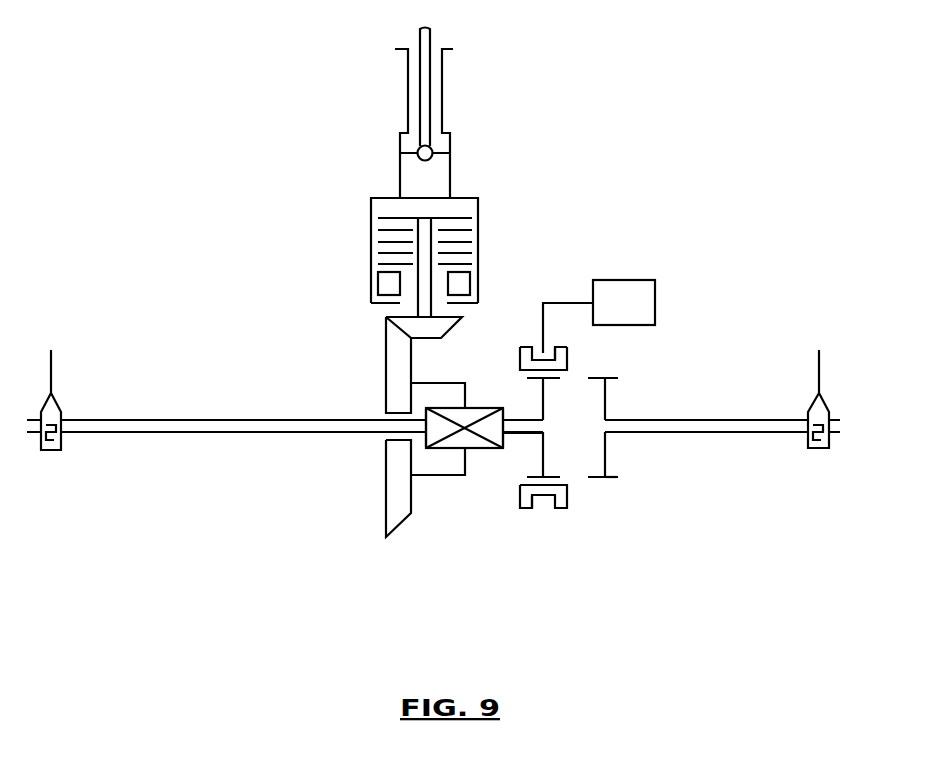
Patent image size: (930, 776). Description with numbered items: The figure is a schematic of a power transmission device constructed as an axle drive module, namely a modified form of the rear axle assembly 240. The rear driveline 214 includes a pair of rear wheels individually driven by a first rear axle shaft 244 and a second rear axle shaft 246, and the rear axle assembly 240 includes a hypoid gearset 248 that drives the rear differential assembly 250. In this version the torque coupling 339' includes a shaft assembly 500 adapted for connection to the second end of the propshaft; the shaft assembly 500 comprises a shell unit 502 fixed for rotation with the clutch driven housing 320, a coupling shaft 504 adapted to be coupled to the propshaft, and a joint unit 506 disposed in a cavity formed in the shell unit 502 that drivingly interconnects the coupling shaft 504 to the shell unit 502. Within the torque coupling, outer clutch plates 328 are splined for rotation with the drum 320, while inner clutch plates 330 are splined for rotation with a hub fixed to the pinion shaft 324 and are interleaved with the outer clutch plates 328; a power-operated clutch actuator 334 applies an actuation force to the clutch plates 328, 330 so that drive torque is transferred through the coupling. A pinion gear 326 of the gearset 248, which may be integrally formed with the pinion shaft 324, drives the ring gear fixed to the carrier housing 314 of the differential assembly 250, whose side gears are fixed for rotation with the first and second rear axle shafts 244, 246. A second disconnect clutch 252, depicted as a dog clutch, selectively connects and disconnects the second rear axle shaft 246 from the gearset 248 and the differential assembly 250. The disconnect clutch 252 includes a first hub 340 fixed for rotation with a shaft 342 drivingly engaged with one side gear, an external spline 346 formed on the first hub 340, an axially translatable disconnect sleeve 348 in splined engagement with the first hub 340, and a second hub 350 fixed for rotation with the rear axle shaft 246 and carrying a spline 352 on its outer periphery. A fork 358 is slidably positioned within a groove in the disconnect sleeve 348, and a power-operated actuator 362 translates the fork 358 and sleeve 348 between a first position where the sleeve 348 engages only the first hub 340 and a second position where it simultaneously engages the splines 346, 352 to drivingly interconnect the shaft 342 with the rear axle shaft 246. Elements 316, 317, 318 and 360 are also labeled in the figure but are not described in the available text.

The rear axle assembly 240 is at (212, 182).
The first rear axle shaft 244 is at (135, 420).
The second rear axle shaft 246 is at (777, 420).
The second hypoid gearset 248 is at (355, 385).
The rear differential assembly 250 is at (493, 402).
The second disconnect clutch 252 is at (585, 513).
The rear driveline 214 is at (585, 242).
The carrier housing 314 is at (415, 380).
The shaft 316 is at (440, 428).
The clutch 317 is at (493, 428).
The gear face 318 is at (473, 412).
The drum 320 is at (371, 202).
The pinion shaft 324 is at (425, 237).
The pinion gear 326 is at (412, 315).
The outer clutch plates 328 is at (453, 232).
The inner clutch plates 330 is at (398, 257).
The power-operated clutch actuator 334 is at (470, 285).
The torque coupling 339' is at (436, 235).
The first hub 340 is at (543, 467).
The shaft 342 is at (520, 432).
The external spline 346 is at (549, 492).
The disconnect sleeve 348 is at (560, 358).
The second hub 350 is at (605, 450).
The spline 352 is at (608, 478).
The fork 358 is at (537, 340).
The solenoid 360 is at (535, 505).
The power-operated actuator 362 is at (655, 303).
The shaft assembly 500 is at (480, 92).
The shell unit 502 is at (450, 170).
The coupling shaft 504 is at (430, 33).
The joint unit 506 is at (428, 148).